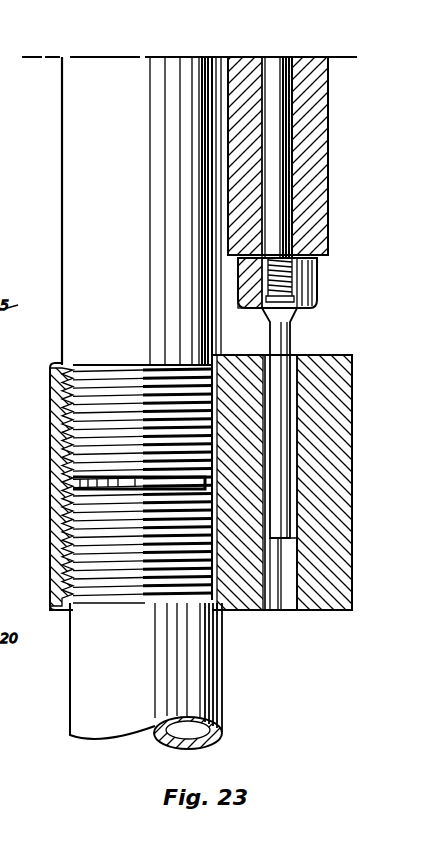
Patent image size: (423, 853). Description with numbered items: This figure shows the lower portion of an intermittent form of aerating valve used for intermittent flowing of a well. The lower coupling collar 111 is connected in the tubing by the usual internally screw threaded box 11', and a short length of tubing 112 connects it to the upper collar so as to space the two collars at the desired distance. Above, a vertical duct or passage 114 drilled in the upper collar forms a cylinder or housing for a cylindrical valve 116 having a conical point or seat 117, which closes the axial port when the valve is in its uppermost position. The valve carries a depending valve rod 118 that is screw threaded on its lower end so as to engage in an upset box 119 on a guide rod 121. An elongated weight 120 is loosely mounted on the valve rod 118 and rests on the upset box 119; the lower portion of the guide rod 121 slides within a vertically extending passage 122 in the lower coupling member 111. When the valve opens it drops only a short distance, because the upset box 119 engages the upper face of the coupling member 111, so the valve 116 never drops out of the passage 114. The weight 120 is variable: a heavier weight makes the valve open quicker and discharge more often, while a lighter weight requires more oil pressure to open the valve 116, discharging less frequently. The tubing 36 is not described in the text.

The tube 36 is at (90, 704).
The lower coupling collar 111 is at (329, 604).
The internally screw threaded box 11' is at (31, 570).
The short length of tubing 112 is at (80, 178).
The vertical duct or passage 114 is at (9, 367).
The cylindrical valve 116 is at (11, 329).
The conical point or seat 117 is at (33, 311).
The valve rod 118 is at (270, 62).
The upset box 119 is at (304, 279).
The weight 120 is at (318, 137).
The guide rod 121 is at (278, 338).
The vertical passage 122 is at (290, 602).